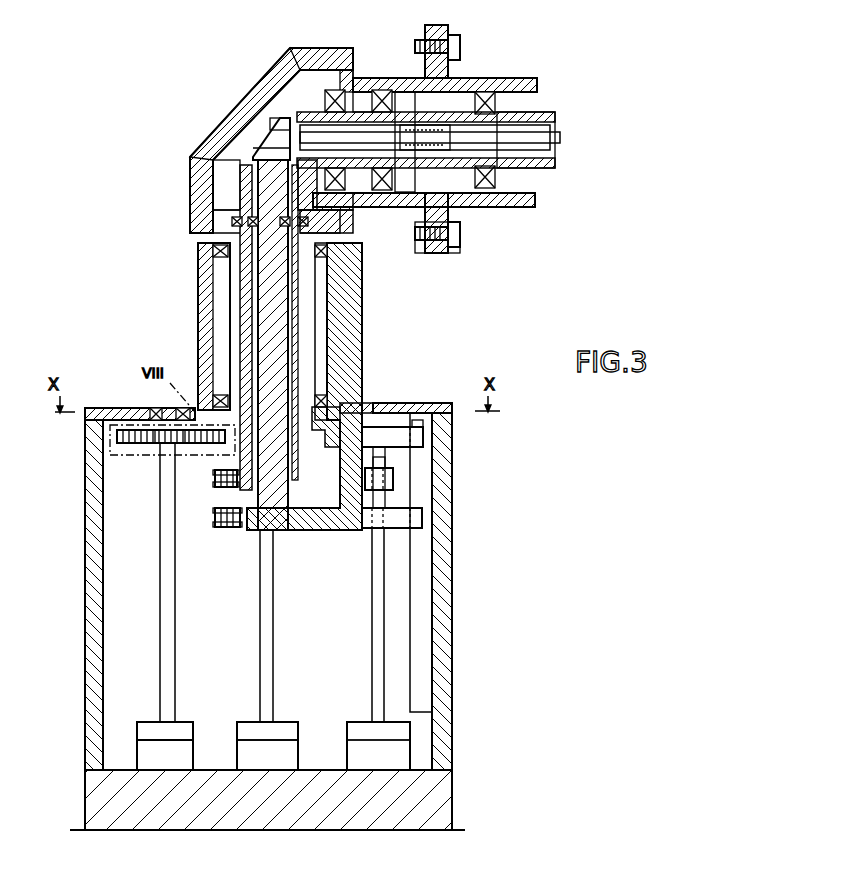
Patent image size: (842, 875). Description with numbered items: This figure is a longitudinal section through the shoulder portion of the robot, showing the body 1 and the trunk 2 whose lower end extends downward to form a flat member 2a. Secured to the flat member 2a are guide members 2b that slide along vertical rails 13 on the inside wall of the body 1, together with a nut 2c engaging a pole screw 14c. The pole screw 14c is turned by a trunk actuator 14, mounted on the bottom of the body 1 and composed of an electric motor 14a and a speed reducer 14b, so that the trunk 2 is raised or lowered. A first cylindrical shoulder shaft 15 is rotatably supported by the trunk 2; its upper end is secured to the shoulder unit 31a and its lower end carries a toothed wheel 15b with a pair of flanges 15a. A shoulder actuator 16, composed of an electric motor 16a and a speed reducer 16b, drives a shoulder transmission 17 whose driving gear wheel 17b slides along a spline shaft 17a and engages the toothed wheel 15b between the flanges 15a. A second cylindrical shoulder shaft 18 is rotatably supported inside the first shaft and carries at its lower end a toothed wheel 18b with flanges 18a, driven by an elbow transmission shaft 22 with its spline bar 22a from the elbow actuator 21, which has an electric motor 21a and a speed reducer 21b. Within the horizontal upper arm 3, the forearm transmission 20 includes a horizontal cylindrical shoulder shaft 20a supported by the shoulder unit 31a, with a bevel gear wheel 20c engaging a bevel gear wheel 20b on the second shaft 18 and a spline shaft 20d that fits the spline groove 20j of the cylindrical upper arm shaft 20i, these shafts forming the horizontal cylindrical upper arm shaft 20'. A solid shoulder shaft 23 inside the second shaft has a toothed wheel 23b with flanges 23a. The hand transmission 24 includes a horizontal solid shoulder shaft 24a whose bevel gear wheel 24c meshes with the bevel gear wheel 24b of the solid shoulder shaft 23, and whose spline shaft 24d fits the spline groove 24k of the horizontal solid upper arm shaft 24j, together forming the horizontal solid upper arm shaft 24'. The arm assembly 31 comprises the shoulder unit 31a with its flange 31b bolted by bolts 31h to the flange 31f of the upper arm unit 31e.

The body 1 is at (450, 818).
The trunk 2 is at (362, 358).
The flat member 2a is at (385, 450).
The guide members 2b is at (423, 437).
The nut 2c is at (393, 480).
The horizontal upper arm 3 is at (445, 255).
The vertical rails 13 is at (405, 562).
The trunk actuator 14 is at (410, 740).
The electric motor 14a is at (410, 762).
The speed reducer 14b is at (410, 728).
The pole screw 14c is at (385, 627).
The first cylindrical shoulder shaft 15 is at (215, 312).
The flanges 15a is at (320, 415).
The toothed wheel 15b is at (370, 405).
The shoulder actuator 16 is at (137, 740).
The electric motor 16a is at (137, 758).
The speed reducer 16b is at (137, 726).
The shoulder transmission 17 is at (160, 440).
The spline shaft 17a is at (160, 605).
The driving gear wheel 17b is at (120, 436).
The second cylindrical shoulder shaft 18 is at (246, 282).
The flanges 18a is at (215, 490).
The toothed wheel 18b is at (217, 477).
The forearm transmission 20 is at (402, 98).
The horizontal cylindrical upper arm shaft 20' is at (564, 139).
The horizontal cylindrical shoulder shaft 20a is at (357, 77).
The bevel gear wheel 20b is at (200, 168).
The bevel gear wheel 20c is at (283, 90).
The spline shaft 20d is at (405, 78).
The cylindrical upper arm shaft 20i is at (545, 114).
The spline groove 20j is at (470, 78).
The elbow actuator 21 is at (237, 737).
The electric motor 21a is at (237, 752).
The speed reducer 21b is at (250, 720).
The elbow transmission shaft 22 is at (277, 722).
The spline bar 22a is at (273, 603).
The solid shoulder shaft 23 is at (280, 330).
The flanges 23a is at (227, 530).
The toothed wheel 23b is at (215, 517).
The hand transmission 24 is at (423, 203).
The horizontal solid upper arm shaft 24' is at (455, 146).
The horizontal solid shoulder shaft 24a is at (390, 185).
The bevel gear wheel 24b is at (258, 157).
The bevel gear wheel 24c is at (275, 128).
The spline shaft 24d is at (400, 195).
The horizontal solid upper arm shaft 24j is at (545, 152).
The spline groove 24k is at (460, 205).
The arm assembly 31 is at (445, 28).
The shoulder unit 31a is at (292, 60).
The flange 31b is at (418, 40).
The upper arm unit 31e is at (527, 78).
The flange 31f is at (460, 40).
The bolts 31h is at (460, 235).